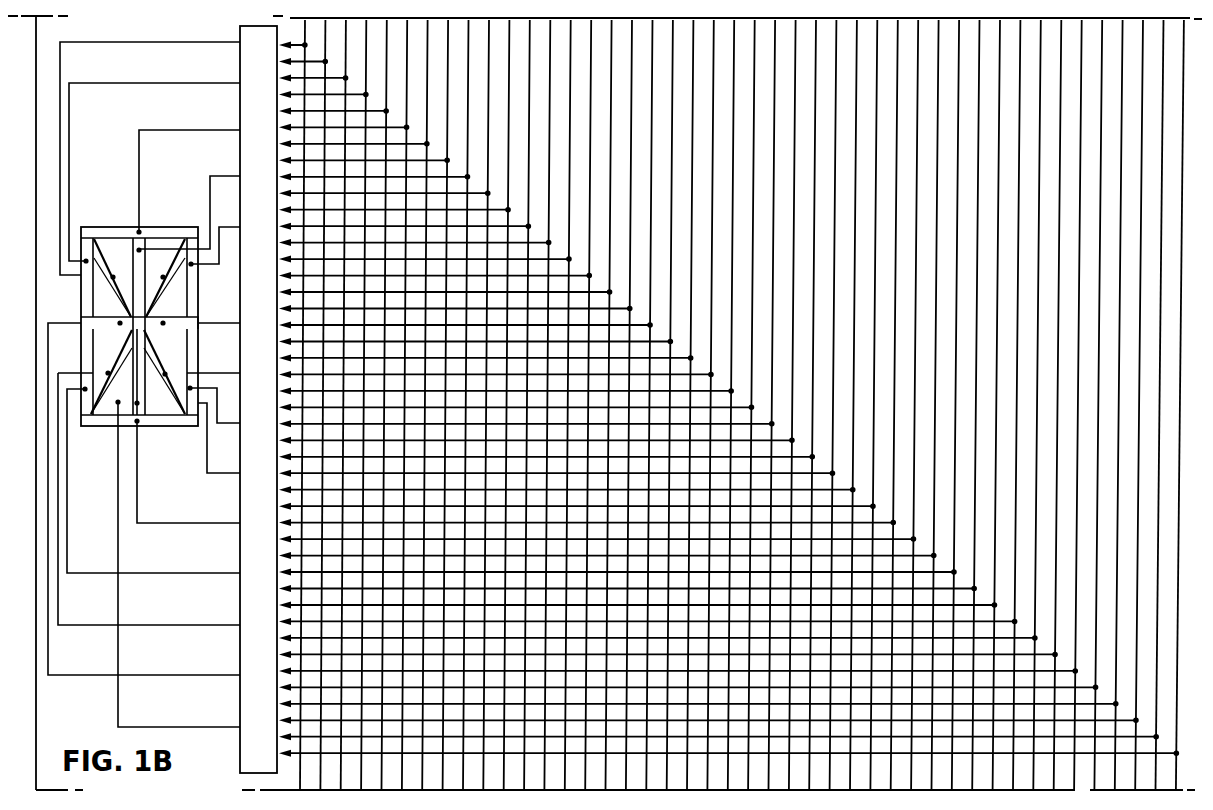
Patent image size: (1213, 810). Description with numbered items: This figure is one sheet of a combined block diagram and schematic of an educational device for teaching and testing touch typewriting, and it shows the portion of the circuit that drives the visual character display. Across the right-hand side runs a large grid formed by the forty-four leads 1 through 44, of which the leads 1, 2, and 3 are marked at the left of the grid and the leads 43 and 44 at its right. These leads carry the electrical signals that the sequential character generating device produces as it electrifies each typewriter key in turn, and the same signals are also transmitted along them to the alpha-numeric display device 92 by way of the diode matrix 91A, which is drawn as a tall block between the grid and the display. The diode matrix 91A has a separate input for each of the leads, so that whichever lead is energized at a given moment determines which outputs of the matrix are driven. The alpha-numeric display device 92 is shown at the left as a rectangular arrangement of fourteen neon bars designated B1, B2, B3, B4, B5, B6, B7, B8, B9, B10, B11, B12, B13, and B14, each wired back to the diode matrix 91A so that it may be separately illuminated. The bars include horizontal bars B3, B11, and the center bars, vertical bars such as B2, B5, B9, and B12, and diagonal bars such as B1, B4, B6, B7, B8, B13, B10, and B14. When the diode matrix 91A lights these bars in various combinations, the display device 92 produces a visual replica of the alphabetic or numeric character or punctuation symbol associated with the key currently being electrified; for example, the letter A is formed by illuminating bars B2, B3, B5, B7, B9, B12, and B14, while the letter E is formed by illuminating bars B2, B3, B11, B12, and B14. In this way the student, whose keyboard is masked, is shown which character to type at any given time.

The diode matrix 91A is at (245, 34).
The alpha-numeric display device 92 is at (160, 207).
The lead 1 is at (310, 33).
The lead 2 is at (331, 33).
The lead 3 is at (351, 33).
The lead 43 is at (1163, 52).
The lead 44 is at (1184, 52).
The neon bar B1 is at (117, 268).
The neon bar B2 is at (83, 242).
The neon bar B3 is at (123, 227).
The neon bar B4 is at (142, 281).
The neon bar B5 is at (196, 292).
The neon bar B6 is at (152, 302).
The neon bar B7 is at (152, 330).
The neon bar B8 is at (163, 366).
The neon bar B9 is at (188, 372).
The neon bar B10 is at (142, 368).
The neon bar B11 is at (105, 428).
The neon bar B12 is at (83, 358).
The neon bar B13 is at (113, 362).
The neon bar B14 is at (125, 318).